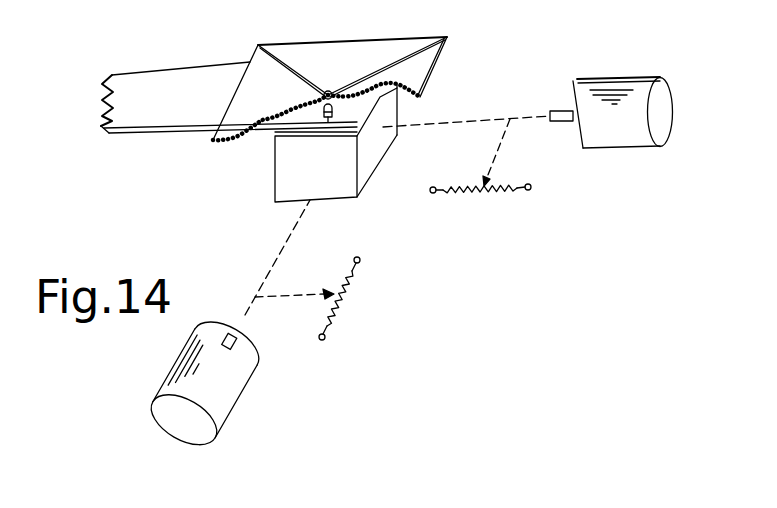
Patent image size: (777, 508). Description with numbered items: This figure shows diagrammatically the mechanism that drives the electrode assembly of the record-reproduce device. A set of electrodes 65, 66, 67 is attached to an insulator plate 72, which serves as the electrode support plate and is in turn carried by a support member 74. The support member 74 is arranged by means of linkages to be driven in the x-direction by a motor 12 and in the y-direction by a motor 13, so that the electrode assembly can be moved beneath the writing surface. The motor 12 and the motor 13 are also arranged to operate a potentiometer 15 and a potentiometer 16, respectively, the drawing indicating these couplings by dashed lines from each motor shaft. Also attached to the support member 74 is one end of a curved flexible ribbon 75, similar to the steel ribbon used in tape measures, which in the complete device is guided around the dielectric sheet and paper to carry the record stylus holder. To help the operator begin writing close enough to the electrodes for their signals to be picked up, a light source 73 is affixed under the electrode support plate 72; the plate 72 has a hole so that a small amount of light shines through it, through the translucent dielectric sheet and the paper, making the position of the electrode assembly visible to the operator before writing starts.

The motor 12 is at (616, 134).
The motor 13 is at (232, 392).
The potentiometer 15 is at (477, 200).
The potentiometer 16 is at (345, 295).
The electrode 65 is at (257, 70).
The electrode 66 is at (328, 55).
The electrode 67 is at (420, 65).
The insulator plate 72 is at (407, 100).
The light source 73 is at (333, 108).
The support member 74 is at (285, 162).
The curved flexible ribbon 75 is at (147, 112).